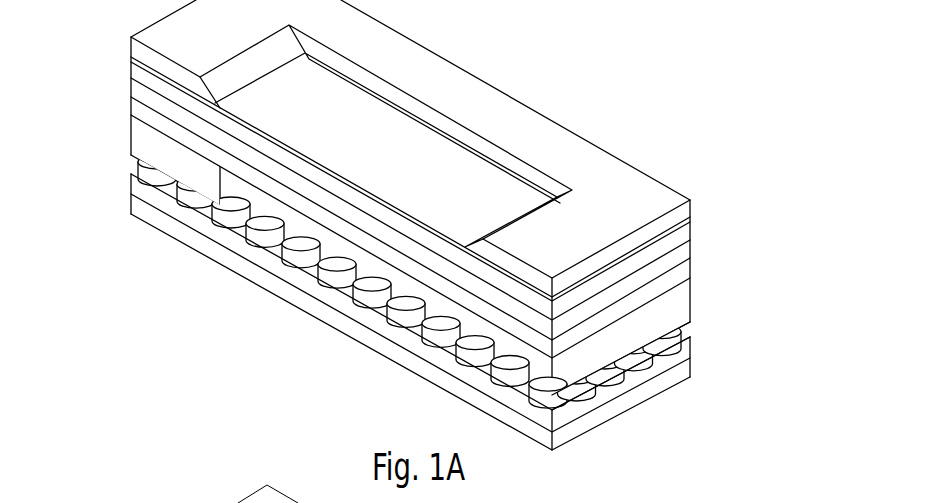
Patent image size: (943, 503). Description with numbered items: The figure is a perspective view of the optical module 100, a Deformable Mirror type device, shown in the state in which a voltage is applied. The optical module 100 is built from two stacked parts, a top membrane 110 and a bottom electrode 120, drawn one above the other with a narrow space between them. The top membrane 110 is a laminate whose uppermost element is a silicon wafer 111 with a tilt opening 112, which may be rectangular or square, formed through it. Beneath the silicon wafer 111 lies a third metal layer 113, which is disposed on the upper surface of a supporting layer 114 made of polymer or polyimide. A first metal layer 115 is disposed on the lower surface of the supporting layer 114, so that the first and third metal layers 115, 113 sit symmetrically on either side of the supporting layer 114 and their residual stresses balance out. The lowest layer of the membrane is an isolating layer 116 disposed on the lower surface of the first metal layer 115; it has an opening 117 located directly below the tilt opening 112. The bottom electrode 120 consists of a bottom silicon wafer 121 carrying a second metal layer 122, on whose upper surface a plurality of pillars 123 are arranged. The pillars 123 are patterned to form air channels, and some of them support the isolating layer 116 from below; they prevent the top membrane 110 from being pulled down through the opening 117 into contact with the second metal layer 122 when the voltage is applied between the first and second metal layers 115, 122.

The optical module 100 is at (698, 105).
The top membrane 110 is at (127, 32).
The silicon wafer 111 is at (671, 213).
The tilt opening 112 is at (430, 160).
The third metal layer 113 is at (685, 238).
The supporting layer 114 is at (683, 257).
The first metal layer 115 is at (682, 277).
The isolating layer 116 is at (680, 302).
The opening 117 is at (288, 227).
The bottom electrode 120 is at (127, 167).
The bottom silicon wafer 121 is at (617, 403).
The second metal layer 122 is at (682, 350).
The pillars 123 is at (688, 330).